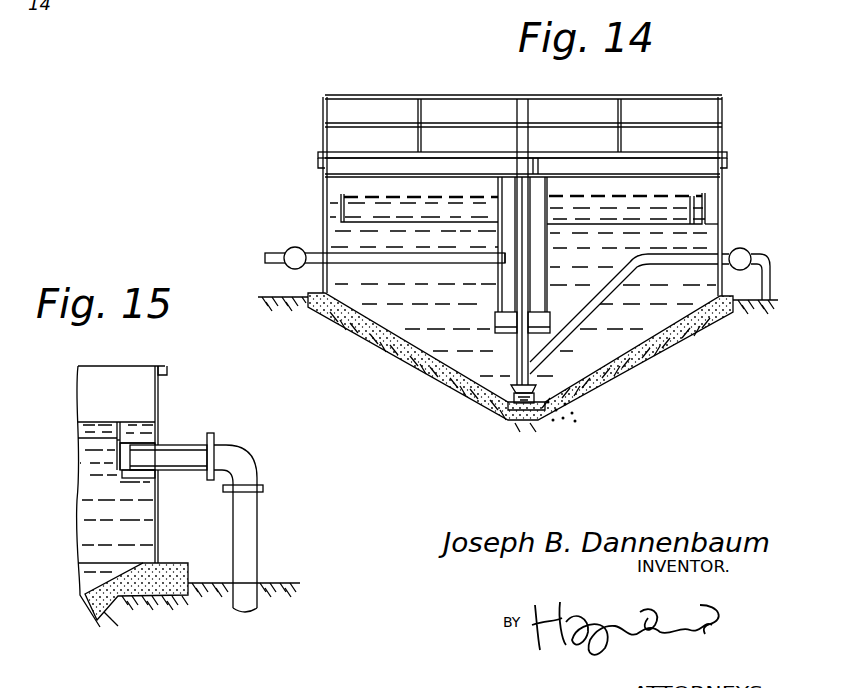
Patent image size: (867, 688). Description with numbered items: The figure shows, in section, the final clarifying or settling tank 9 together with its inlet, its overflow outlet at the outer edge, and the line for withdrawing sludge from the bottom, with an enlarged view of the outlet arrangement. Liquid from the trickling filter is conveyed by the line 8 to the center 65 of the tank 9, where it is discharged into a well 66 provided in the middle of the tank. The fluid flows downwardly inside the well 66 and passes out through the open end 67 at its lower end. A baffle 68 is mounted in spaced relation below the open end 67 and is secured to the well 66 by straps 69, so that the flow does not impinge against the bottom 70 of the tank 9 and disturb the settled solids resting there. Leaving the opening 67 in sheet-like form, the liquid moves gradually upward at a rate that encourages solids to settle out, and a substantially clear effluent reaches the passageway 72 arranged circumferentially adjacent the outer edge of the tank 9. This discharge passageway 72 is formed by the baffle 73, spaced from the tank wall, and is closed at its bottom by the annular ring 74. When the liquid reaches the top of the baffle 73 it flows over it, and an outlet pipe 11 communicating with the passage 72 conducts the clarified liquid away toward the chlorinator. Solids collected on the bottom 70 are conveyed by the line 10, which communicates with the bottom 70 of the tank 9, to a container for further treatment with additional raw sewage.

In FIG. 14, the line 8 is at (276, 252).
In FIG. 14, the final settling tank 9 is at (722, 186).
In FIG. 15, the final settling tank 9 is at (159, 392).
In FIG. 14, the line 10 is at (762, 295).
In FIG. 15, the outlet pipe 11 is at (170, 446).
In FIG. 14, the center 65 is at (503, 270).
In FIG. 14, the well 66 is at (555, 195).
In FIG. 14, the open end 67 is at (503, 330).
In FIG. 14, the baffle 68 is at (505, 380).
In FIG. 14, the straps 69 is at (548, 320).
In FIG. 14, the bottom 70 is at (497, 412).
In FIG. 15, the bottom 70 is at (117, 614).
In FIG. 14, the passageway 72 is at (330, 208).
In FIG. 15, the passageway 72 is at (140, 432).
In FIG. 14, the baffle 73 is at (690, 200).
In FIG. 15, the baffle 73 is at (117, 440).
In FIG. 14, the annular ring 74 is at (705, 223).
In FIG. 15, the annular ring 74 is at (140, 474).